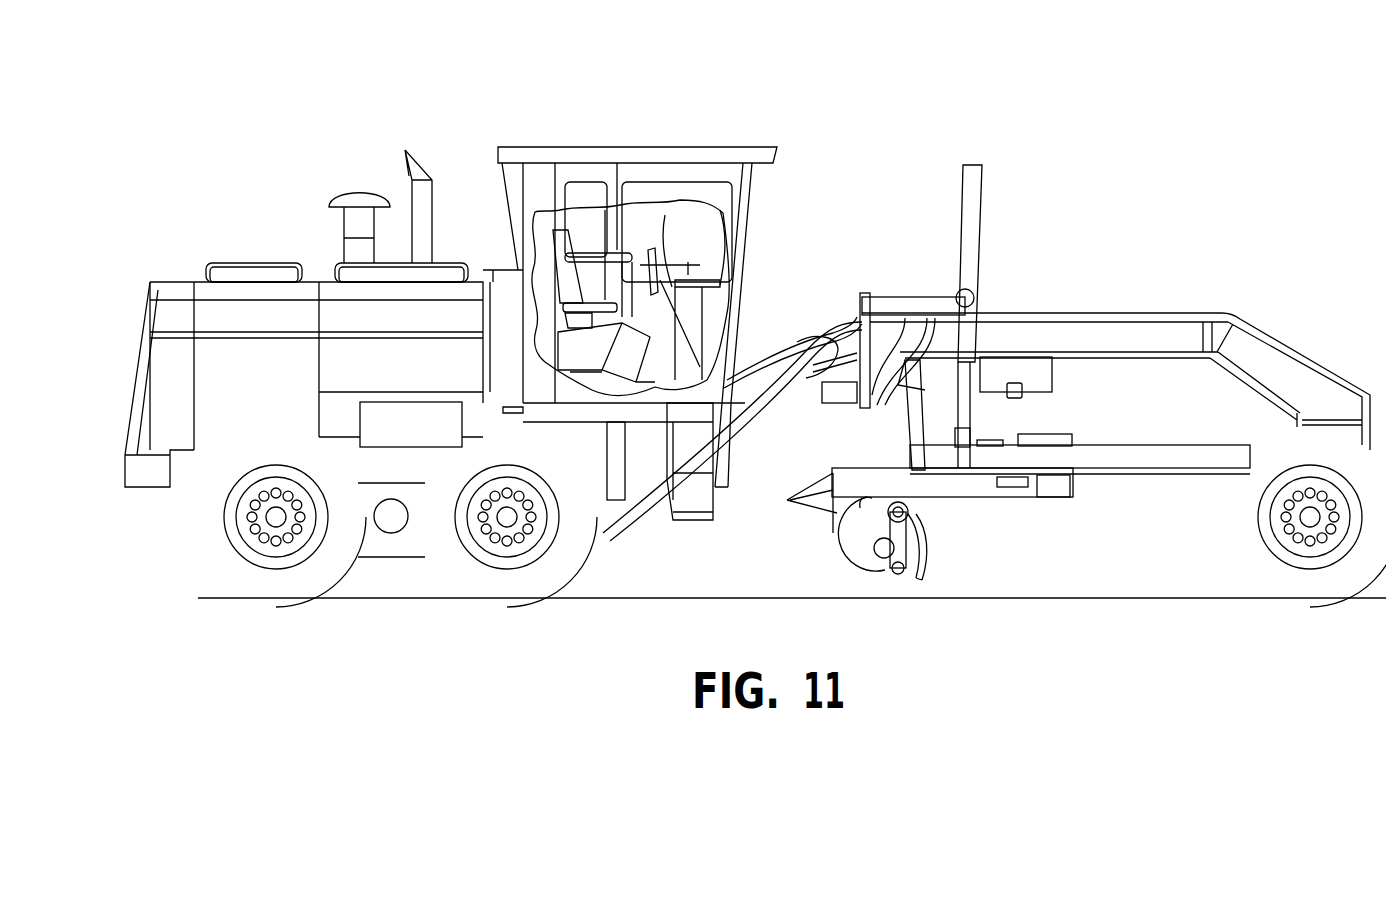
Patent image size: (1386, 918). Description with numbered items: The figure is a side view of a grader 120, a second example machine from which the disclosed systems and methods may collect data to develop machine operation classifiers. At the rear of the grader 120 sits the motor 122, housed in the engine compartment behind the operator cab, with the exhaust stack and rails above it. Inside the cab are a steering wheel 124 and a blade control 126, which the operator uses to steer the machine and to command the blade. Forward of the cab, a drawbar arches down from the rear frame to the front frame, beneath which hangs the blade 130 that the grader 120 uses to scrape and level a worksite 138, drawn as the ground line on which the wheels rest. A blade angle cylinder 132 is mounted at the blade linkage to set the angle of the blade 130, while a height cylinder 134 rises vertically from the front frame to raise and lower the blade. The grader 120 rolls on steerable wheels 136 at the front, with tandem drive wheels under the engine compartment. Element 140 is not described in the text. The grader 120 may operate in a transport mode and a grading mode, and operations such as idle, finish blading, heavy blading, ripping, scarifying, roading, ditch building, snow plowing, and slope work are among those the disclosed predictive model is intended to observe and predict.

The grader 120 is at (755, 359).
The motor 122 is at (322, 277).
The steering wheel 124 is at (651, 253).
The blade control 126 is at (688, 265).
The blade 130 is at (917, 533).
The blade angle cylinder 132 is at (898, 420).
The height cylinder 134 is at (972, 258).
The steerable wheels 136 is at (1223, 545).
The worksite 138 is at (612, 600).
The moldboard blade 140 is at (1178, 475).